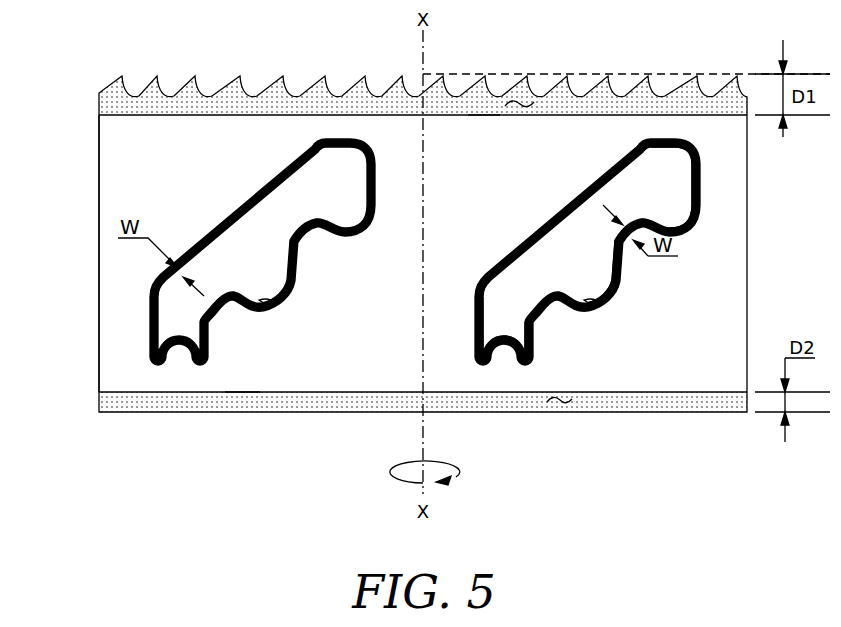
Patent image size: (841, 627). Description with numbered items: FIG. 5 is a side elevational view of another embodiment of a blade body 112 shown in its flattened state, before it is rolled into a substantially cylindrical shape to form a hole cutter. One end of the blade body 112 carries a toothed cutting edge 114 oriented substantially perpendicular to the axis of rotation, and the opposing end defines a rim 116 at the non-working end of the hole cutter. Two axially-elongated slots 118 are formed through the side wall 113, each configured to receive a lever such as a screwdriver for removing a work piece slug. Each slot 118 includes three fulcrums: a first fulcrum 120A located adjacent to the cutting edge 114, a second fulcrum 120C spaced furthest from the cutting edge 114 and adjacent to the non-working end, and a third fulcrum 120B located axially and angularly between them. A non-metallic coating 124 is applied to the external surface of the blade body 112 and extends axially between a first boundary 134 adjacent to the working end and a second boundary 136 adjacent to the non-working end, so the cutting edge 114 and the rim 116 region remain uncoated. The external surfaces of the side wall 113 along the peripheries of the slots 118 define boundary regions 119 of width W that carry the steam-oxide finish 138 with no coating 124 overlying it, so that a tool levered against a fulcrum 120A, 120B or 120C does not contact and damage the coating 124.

The blade body 112 is at (99, 175).
The side wall 113 is at (345, 338).
The cutting edge 114 is at (638, 87).
The rim 116 is at (684, 413).
The slot 118 is at (253, 213).
The boundary region 119 is at (160, 283).
The first fulcrum 120A is at (672, 218).
The third fulcrum 120B is at (599, 297).
The second fulcrum 120C is at (507, 374).
The coating 124 is at (341, 270).
The first boundary 134 is at (494, 122).
The second boundary 136 is at (248, 389).
The steam-oxide finish 138 is at (268, 187).